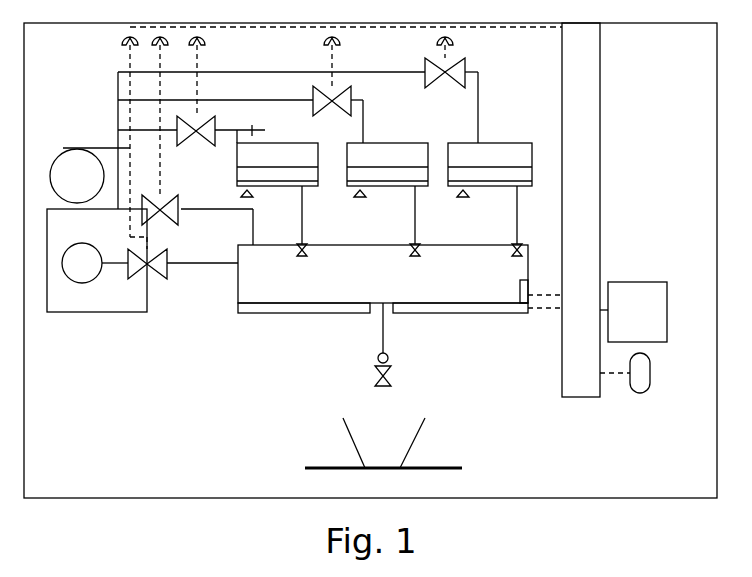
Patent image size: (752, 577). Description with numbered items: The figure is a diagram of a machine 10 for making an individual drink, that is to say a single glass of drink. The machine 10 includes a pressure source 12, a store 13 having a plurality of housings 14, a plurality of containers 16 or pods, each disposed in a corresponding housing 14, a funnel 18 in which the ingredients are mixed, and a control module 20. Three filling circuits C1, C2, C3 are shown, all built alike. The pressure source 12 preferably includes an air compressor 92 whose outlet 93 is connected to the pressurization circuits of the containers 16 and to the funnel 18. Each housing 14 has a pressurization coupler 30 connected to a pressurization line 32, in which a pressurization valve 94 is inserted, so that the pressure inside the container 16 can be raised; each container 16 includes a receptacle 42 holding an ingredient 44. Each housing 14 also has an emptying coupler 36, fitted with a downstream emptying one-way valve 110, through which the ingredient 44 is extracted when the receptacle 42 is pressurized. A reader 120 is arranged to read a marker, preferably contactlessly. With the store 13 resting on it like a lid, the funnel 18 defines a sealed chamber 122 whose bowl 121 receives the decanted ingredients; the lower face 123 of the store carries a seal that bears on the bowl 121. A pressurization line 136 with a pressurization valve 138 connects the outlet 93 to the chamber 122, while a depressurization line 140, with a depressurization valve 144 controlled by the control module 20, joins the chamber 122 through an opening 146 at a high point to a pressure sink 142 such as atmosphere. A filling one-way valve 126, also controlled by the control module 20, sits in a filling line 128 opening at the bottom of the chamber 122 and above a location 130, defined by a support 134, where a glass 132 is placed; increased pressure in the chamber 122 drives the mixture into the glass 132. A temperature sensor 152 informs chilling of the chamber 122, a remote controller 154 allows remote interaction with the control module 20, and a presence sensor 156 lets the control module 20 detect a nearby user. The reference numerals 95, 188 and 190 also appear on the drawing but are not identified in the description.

The machine 10 is at (697, 40).
The pressure source 12 is at (65, 140).
The store 13 is at (343, 222).
The housing 14 is at (234, 181).
The container 16 is at (270, 136).
The funnel 18 is at (267, 244).
The control module 20 is at (581, 210).
The pressurization coupler 30 is at (217, 143).
The pressurization line 32 is at (223, 127).
The emptying coupler 36 is at (286, 215).
The receptacle 42 is at (272, 155).
The ingredient 44 is at (319, 174).
The compressor 92 is at (77, 176).
The outlet 93 is at (116, 146).
The pressurization valve 94 is at (220, 104).
The sample introduction module 95 is at (50, 313).
The downstream emptying one-way valve 110 is at (308, 246).
The reader 120 is at (240, 196).
The bowl 121 is at (233, 314).
The chamber 122 is at (383, 274).
The lower face 123 is at (399, 248).
The filling one-way valve 126 is at (405, 373).
The filling line 128 is at (387, 325).
The location 130 is at (313, 438).
The glass 132 is at (422, 423).
The support 134 is at (463, 469).
The pressurization line 136 is at (226, 212).
The pressurization valve 138 is at (137, 216).
The depressurization line 140 is at (176, 276).
The pressure sink 142 is at (82, 263).
The depressurization valve 144 is at (130, 278).
The opening 146 is at (237, 267).
The temperature sensor 152 is at (518, 288).
The remote controller 154 is at (640, 395).
The presence sensor 156 is at (633, 312).
The conduit 188 is at (362, 215).
The housing 190 is at (297, 318).
The first circuit C1 is at (310, 135).
The second circuit C2 is at (400, 133).
The third circuit C3 is at (503, 133).